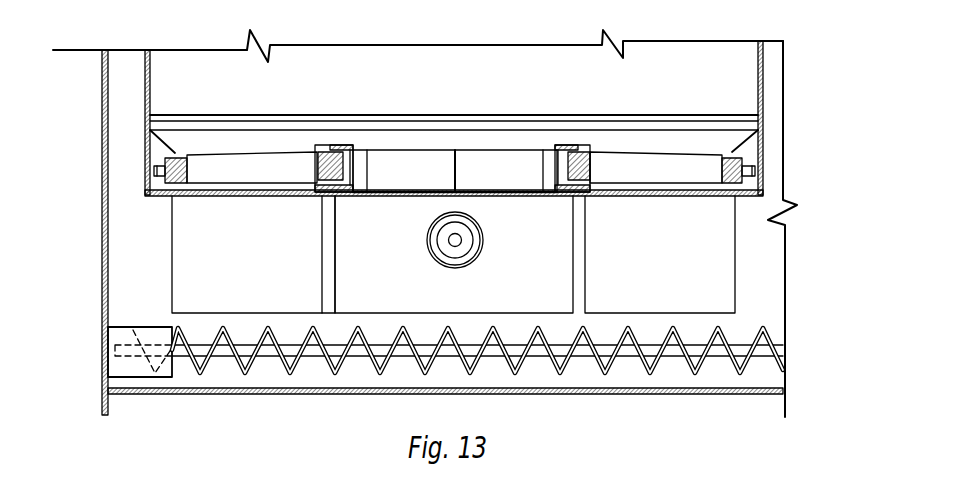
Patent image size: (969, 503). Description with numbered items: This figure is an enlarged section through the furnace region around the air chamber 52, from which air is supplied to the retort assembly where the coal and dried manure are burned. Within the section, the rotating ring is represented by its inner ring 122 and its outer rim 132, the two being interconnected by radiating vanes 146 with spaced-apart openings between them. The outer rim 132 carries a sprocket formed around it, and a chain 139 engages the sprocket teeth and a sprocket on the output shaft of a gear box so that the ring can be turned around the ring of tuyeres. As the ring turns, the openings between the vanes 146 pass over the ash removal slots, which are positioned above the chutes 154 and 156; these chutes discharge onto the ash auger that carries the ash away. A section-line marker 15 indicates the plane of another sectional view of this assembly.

The section line 15- 15 is at (602, 228).
The air chamber 52 is at (395, 275).
The inner ring 122 is at (331, 150).
The outer rim 132 is at (174, 185).
The chain 139 is at (147, 175).
The radiating vanes 146 is at (240, 170).
The chute 154 is at (178, 283).
The chute 156 is at (713, 285).